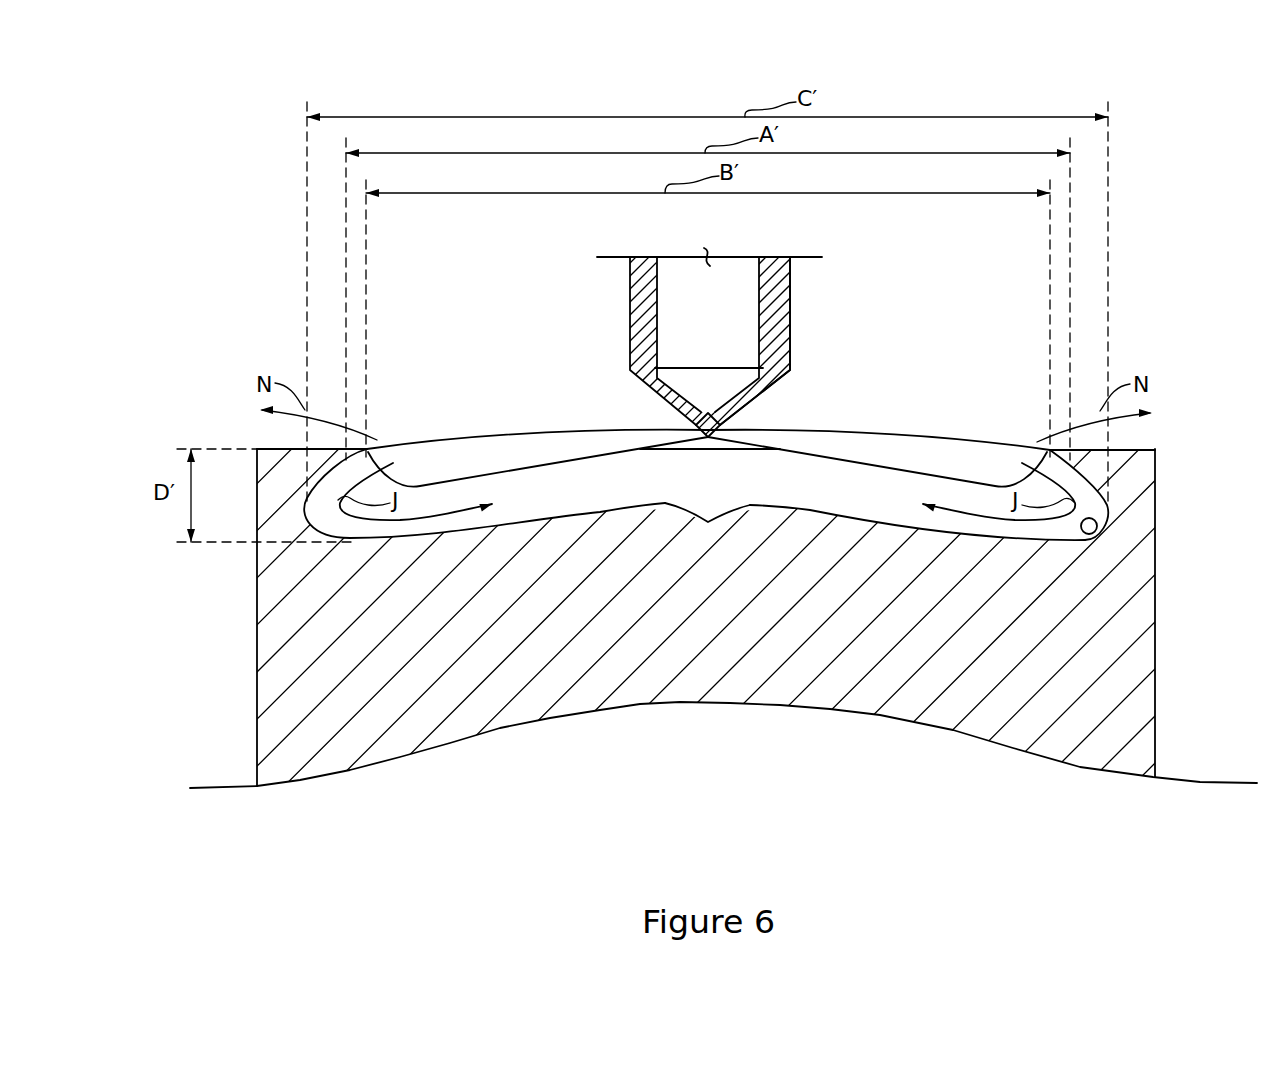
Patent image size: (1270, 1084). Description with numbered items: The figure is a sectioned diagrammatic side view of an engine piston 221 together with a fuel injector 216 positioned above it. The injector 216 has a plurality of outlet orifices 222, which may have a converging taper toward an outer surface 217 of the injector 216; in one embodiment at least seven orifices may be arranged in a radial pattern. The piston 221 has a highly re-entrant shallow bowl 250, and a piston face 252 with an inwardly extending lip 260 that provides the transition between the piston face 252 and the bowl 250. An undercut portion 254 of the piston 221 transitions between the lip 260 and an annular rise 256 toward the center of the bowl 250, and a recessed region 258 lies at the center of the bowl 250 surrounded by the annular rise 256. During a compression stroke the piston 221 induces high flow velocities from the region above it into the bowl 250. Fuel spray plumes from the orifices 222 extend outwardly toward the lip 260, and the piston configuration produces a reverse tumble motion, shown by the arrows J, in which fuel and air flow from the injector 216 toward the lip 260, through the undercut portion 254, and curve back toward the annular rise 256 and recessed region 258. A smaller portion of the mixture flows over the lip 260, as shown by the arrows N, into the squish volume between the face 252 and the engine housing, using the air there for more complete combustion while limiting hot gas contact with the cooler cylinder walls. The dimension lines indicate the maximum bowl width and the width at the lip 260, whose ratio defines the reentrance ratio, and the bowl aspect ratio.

The fuel injector 216 is at (748, 283).
The outer surface of injector 217 is at (797, 351).
The outlet orifices 222 is at (707, 398).
The piston 221 is at (708, 678).
The bowl 250 is at (768, 465).
The piston face 252 is at (1158, 445).
The undercut portion 254 is at (1097, 531).
The annular rise 256 is at (788, 500).
The recessed region 258 is at (700, 513).
The lip 260 is at (357, 452).